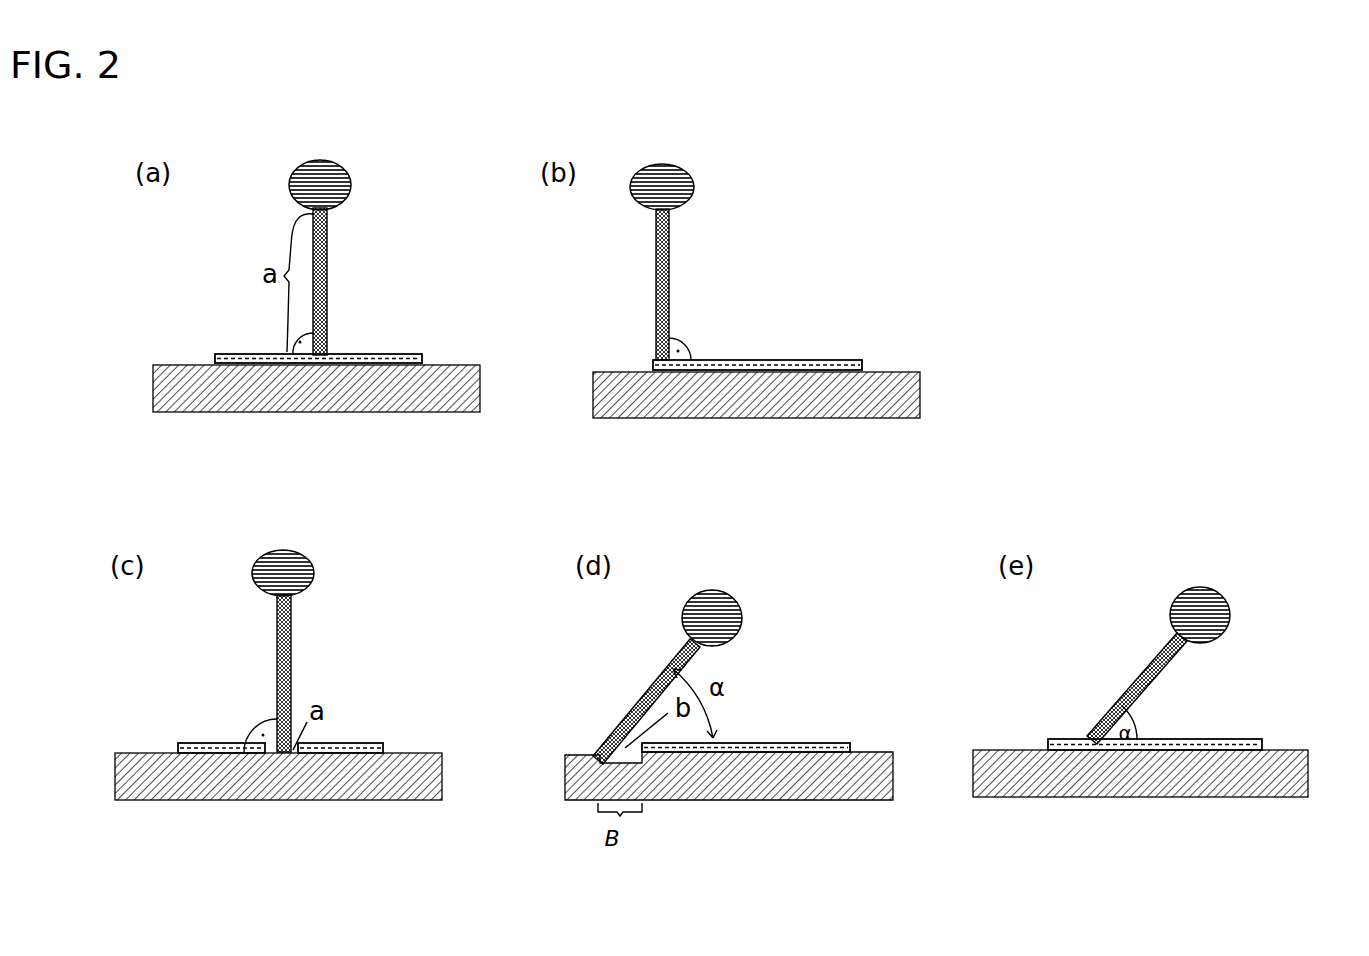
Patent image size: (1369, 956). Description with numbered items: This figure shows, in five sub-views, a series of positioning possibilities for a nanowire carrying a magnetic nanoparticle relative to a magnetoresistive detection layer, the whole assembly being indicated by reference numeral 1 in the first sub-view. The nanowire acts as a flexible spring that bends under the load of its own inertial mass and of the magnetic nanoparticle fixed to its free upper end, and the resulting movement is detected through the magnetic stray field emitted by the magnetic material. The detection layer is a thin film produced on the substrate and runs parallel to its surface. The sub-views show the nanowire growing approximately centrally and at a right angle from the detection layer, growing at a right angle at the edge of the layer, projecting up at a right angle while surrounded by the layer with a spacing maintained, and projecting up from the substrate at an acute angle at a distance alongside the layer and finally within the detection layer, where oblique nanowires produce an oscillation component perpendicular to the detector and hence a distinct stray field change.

The anchor element 1 is at (289, 250).